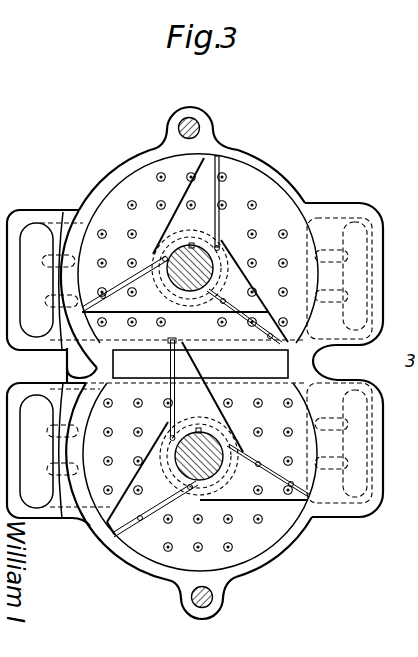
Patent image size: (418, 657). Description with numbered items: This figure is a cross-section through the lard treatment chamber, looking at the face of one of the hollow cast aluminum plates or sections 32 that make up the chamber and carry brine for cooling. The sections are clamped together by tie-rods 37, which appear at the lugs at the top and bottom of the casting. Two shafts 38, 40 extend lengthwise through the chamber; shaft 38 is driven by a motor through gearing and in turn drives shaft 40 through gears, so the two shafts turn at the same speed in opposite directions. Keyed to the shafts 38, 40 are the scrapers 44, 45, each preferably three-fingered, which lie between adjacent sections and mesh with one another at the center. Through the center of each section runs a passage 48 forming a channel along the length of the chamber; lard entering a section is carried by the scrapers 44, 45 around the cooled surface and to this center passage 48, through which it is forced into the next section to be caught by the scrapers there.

The cast aluminum plate or section 32 is at (306, 196).
The tie-rod 37 is at (187, 118).
The shaft 38 is at (221, 247).
The shaft 40 is at (172, 502).
The scraper 44 is at (208, 175).
The scraper 45 is at (281, 478).
The passage 48 is at (270, 361).